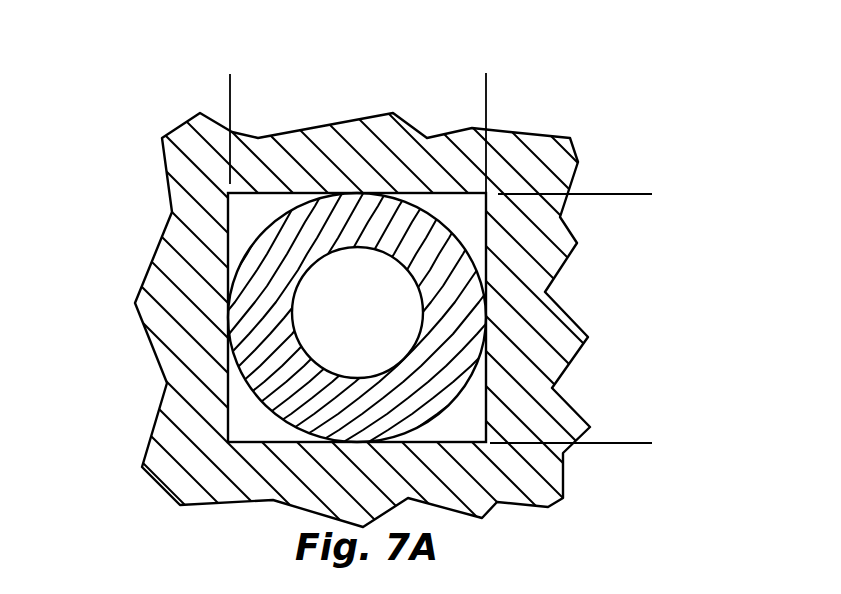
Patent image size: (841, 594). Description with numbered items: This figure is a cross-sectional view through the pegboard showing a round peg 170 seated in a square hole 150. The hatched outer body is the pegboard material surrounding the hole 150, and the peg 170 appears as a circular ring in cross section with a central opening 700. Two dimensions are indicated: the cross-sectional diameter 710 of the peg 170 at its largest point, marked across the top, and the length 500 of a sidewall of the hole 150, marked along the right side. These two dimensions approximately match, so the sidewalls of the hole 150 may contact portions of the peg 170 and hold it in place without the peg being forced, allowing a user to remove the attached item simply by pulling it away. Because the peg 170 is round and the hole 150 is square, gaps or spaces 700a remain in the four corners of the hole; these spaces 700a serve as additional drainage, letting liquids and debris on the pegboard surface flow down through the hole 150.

The hole 150 is at (228, 204).
The peg 170 is at (253, 392).
The central opening 700 is at (357, 312).
The gaps or spaces 700a is at (458, 422).
The cross-sectional diameter 710 is at (486, 85).
The length 500 is at (646, 194).